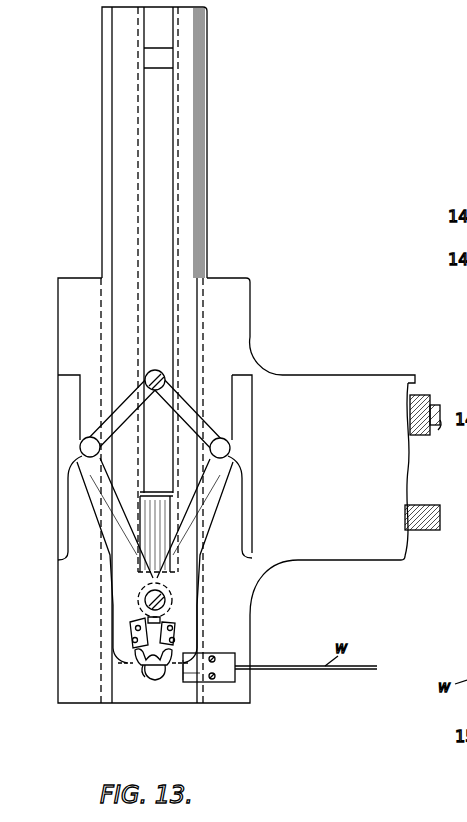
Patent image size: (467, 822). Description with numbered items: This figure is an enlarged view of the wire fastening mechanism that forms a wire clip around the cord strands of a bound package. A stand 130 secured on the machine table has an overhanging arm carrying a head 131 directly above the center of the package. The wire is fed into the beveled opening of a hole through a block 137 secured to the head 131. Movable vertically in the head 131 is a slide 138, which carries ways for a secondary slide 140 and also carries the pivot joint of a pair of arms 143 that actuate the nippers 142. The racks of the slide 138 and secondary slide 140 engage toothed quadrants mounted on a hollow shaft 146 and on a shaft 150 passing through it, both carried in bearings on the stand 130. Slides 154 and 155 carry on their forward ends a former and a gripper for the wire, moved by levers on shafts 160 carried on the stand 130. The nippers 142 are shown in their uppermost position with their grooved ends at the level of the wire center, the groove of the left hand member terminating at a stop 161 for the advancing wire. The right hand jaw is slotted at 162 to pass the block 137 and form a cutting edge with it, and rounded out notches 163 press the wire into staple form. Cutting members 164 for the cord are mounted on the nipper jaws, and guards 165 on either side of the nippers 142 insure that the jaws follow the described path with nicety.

The stand 130 is at (367, 375).
The head 131 is at (240, 280).
The block 137 is at (223, 654).
The slide 138 is at (121, 214).
The secondary slide 140 is at (155, 150).
The nippers 142 is at (182, 557).
The arms 143 is at (172, 403).
The hollow shaft 146 is at (418, 400).
The shaft 150 is at (442, 432).
The slide 154 is at (157, 677).
The slide 155 is at (141, 672).
The shafts 160 is at (420, 509).
The stop 161 is at (117, 658).
The slot 162 is at (200, 607).
The rounded out notches 163 is at (133, 653).
The cutting members 164 is at (131, 630).
The guards 165 is at (65, 437).